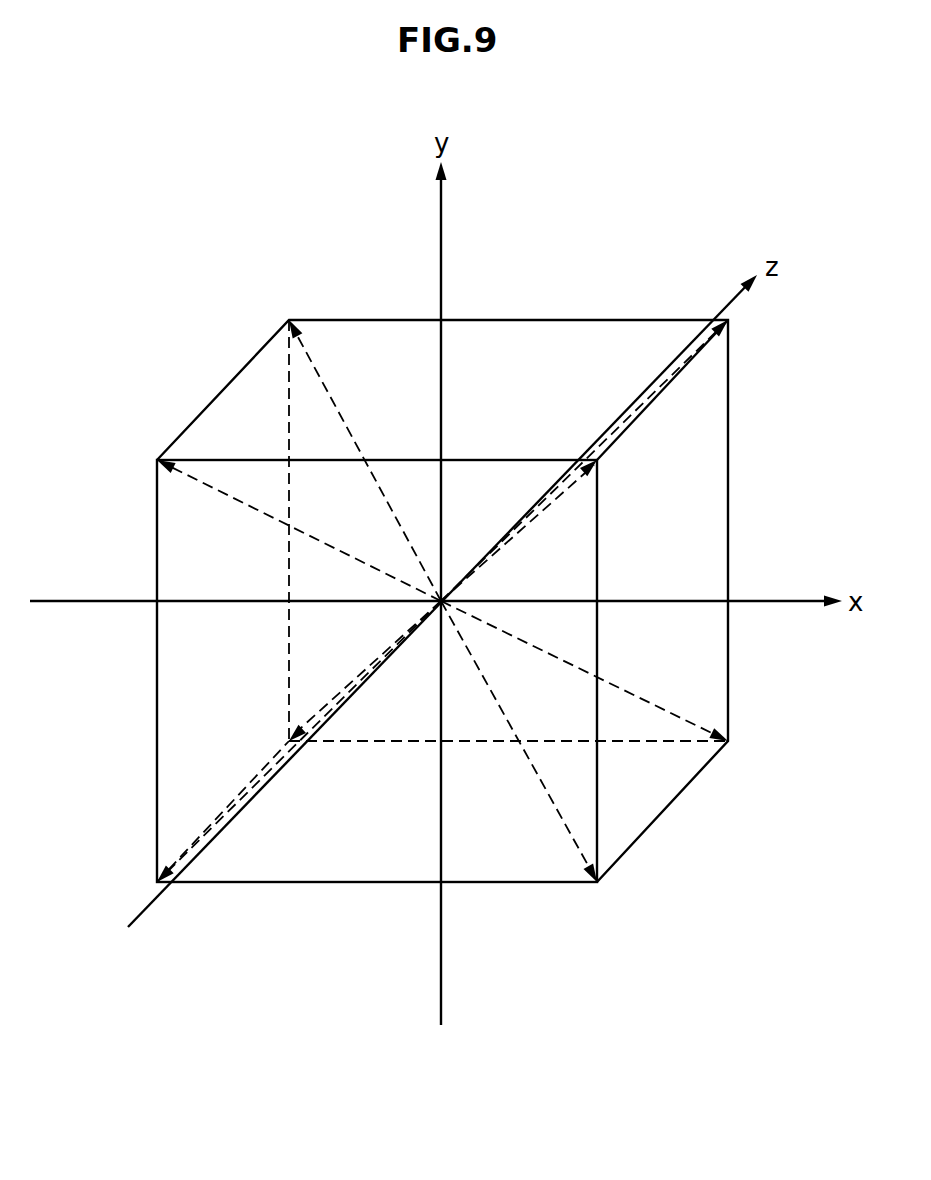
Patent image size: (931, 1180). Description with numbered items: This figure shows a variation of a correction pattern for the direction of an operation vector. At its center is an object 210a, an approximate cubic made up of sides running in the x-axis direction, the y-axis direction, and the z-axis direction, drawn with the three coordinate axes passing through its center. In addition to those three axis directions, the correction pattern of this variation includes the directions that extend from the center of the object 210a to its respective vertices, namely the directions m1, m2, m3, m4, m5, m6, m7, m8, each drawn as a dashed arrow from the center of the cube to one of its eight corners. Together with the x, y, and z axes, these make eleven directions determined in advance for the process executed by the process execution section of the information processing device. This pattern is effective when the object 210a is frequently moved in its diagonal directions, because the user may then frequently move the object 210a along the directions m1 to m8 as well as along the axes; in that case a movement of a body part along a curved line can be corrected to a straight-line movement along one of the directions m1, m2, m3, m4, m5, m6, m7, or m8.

The object 210a is at (555, 317).
The direction m1 is at (333, 400).
The direction m2 is at (233, 498).
The direction m3 is at (540, 507).
The direction m4 is at (640, 400).
The direction m5 is at (343, 693).
The direction m6 is at (257, 783).
The direction m7 is at (542, 783).
The direction m8 is at (637, 693).